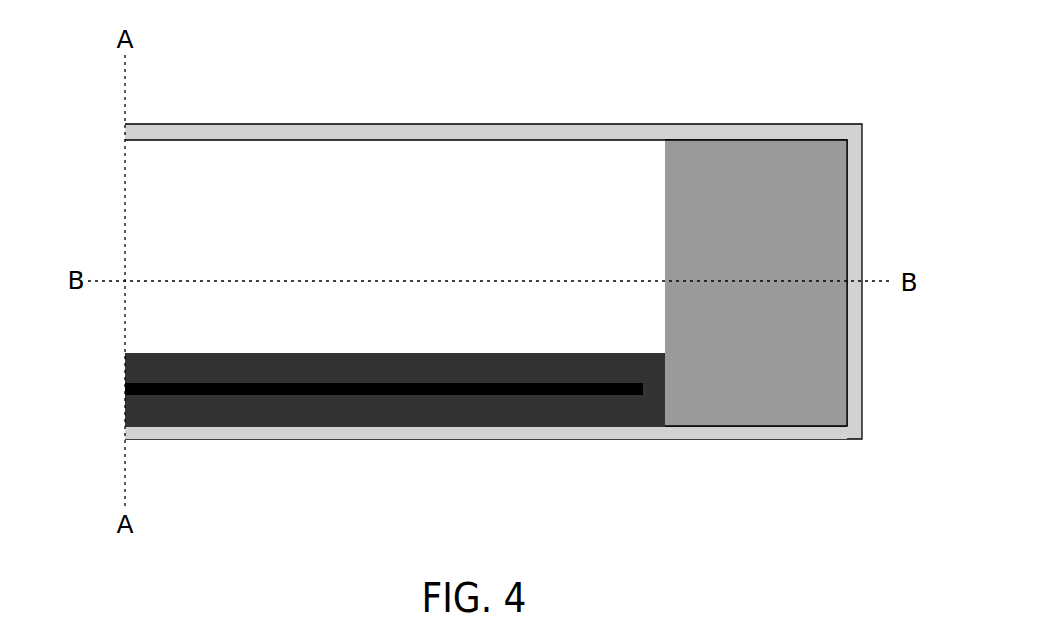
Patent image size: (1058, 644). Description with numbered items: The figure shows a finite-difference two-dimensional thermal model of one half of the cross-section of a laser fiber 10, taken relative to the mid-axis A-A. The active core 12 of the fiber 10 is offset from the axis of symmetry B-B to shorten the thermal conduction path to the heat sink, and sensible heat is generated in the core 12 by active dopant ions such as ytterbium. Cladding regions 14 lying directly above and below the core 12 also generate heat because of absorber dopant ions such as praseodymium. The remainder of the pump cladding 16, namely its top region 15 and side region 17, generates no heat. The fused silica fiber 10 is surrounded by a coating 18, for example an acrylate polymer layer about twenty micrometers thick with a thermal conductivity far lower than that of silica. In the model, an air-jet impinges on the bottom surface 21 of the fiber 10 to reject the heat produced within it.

The laser fiber 10 is at (467, 268).
The core 12 is at (125, 388).
The cladding regions 14 is at (125, 363).
The top region 15 is at (133, 214).
The pump cladding 16 is at (133, 251).
The side region 17 is at (838, 235).
The coating 18 is at (270, 133).
The bottom surface 21 is at (417, 440).